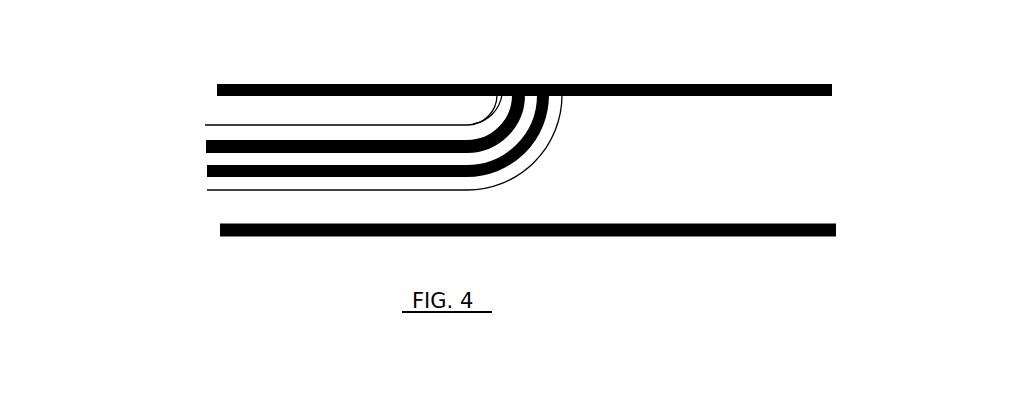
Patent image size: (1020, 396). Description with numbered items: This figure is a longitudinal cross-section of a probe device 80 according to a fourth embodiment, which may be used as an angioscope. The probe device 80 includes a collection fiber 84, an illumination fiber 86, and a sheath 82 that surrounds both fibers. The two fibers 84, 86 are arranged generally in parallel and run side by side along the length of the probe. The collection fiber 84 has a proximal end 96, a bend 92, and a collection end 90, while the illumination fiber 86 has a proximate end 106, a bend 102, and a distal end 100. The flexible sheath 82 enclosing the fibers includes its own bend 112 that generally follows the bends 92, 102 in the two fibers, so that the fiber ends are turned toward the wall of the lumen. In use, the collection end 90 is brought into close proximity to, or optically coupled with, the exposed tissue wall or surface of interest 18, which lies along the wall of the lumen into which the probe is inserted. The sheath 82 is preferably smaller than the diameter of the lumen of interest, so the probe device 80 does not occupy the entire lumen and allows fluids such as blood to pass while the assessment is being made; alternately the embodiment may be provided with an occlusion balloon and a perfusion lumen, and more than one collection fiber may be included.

The tissue surface of interest 18 is at (668, 83).
The probe device 80 is at (868, 124).
The sheath 82 is at (535, 157).
The collection fiber 84 is at (453, 142).
The illumination fiber 86 is at (542, 127).
The collection end 90 is at (531, 100).
The bend 92 is at (473, 125).
The proximal end 96 is at (197, 143).
The distal end 100 is at (573, 83).
The bend 102 is at (508, 160).
The proximate end 106 is at (198, 168).
The bend 112 is at (467, 123).